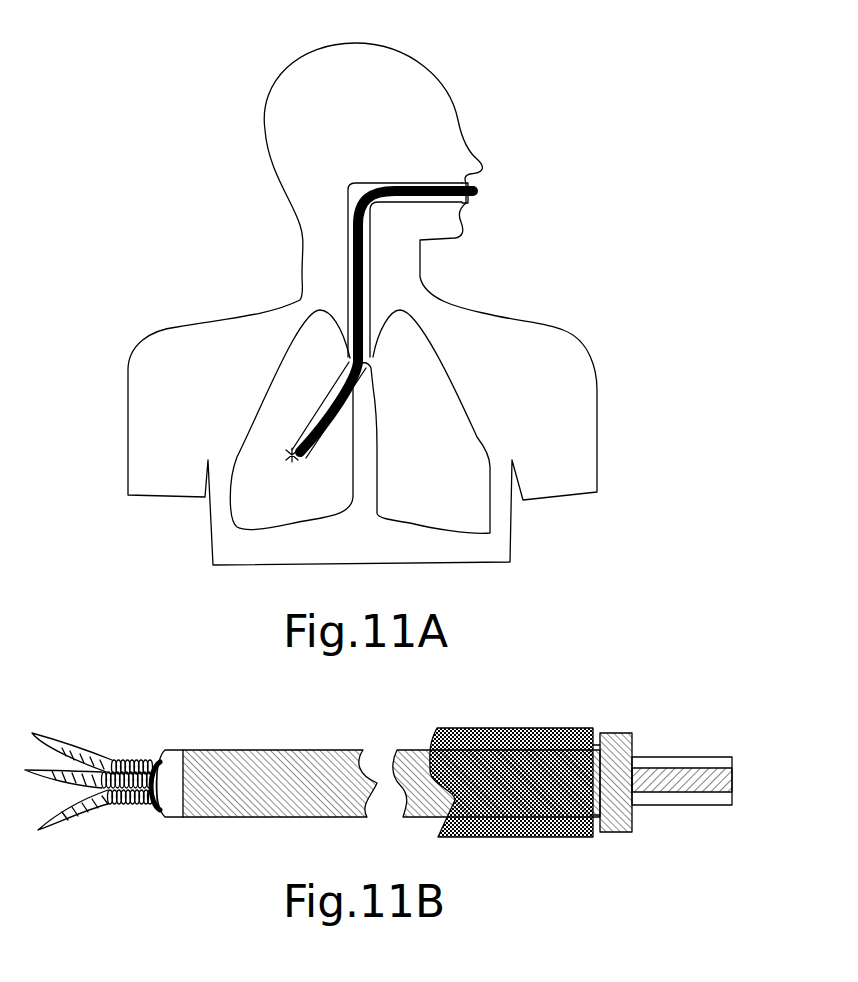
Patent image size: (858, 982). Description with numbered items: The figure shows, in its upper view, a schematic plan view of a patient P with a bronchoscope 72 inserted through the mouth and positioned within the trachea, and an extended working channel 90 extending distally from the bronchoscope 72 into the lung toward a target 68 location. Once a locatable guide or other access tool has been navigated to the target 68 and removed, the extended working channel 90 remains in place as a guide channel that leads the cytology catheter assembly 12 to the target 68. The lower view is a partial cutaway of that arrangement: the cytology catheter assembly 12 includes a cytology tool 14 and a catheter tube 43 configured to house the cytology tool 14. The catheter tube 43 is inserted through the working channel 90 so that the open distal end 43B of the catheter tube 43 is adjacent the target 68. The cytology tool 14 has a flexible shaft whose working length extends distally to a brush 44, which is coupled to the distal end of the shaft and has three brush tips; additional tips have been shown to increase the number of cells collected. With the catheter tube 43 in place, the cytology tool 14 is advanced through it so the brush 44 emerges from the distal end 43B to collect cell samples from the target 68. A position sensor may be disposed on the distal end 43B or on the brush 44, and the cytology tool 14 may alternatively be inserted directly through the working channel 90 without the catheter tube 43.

In FIG. 11A, the patient P is at (445, 72).
In FIG. 11A, the bronchoscope 72 is at (473, 196).
In FIG. 11B, the bronchoscope 72 is at (562, 728).
In FIG. 11A, the target 68 is at (290, 456).
In FIG. 11B, the cytology catheter assembly 12 is at (433, 728).
In FIG. 11B, the cytology tool 14 is at (697, 783).
In FIG. 11B, the catheter tube 43 is at (660, 757).
In FIG. 11B, the distal end of the catheter tube 43B is at (150, 762).
In FIG. 11B, the brush 44 is at (74, 740).
In FIG. 11B, the extended working channel 90 is at (323, 750).